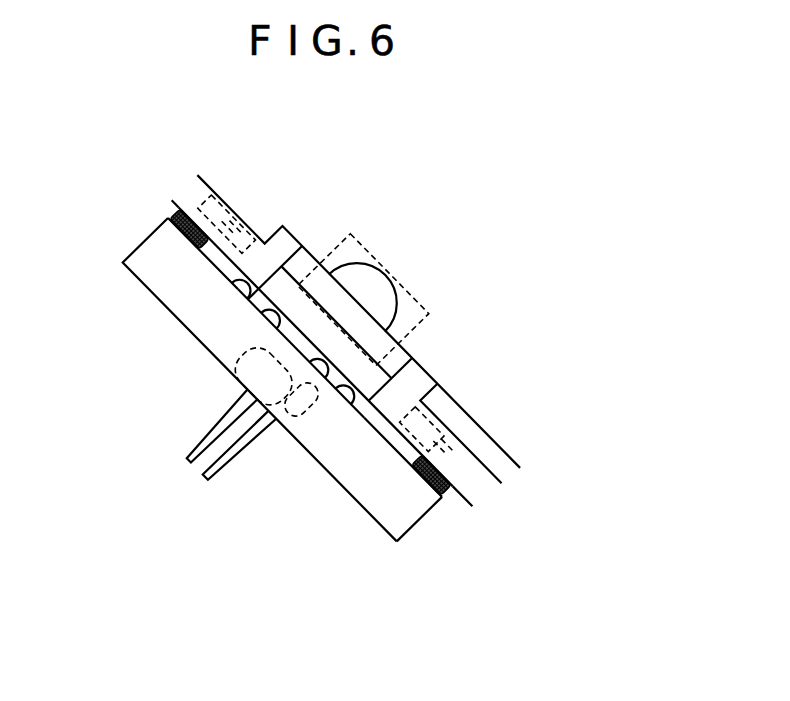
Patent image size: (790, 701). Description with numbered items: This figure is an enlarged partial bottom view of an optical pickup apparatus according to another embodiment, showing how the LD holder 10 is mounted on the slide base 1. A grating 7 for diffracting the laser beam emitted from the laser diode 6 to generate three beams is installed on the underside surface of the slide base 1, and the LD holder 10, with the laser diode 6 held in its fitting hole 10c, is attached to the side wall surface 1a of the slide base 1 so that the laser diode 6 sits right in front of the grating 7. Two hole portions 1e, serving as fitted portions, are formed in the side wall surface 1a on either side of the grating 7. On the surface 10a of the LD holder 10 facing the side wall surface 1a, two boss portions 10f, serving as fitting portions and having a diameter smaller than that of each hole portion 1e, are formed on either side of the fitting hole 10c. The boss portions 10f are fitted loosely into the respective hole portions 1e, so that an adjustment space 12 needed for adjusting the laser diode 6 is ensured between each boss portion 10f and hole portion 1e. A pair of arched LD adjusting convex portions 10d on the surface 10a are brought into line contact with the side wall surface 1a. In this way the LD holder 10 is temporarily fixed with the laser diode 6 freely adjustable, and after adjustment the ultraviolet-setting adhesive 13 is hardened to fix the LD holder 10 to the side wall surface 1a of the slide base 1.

The slide base 1 is at (472, 410).
The side wall surface 1a is at (172, 202).
The hole portion 1e is at (250, 247).
The laser diode 6 is at (237, 373).
The grating 7 is at (396, 272).
The LD holder 10 is at (413, 505).
The surface 10a is at (442, 497).
The fitting hole 10c is at (287, 405).
The LD adjusting convex portion 10d is at (266, 300).
The boss portion 10f is at (210, 260).
The adjustment space 12 is at (222, 205).
The ultraviolet-setting adhesive 13 is at (193, 215).